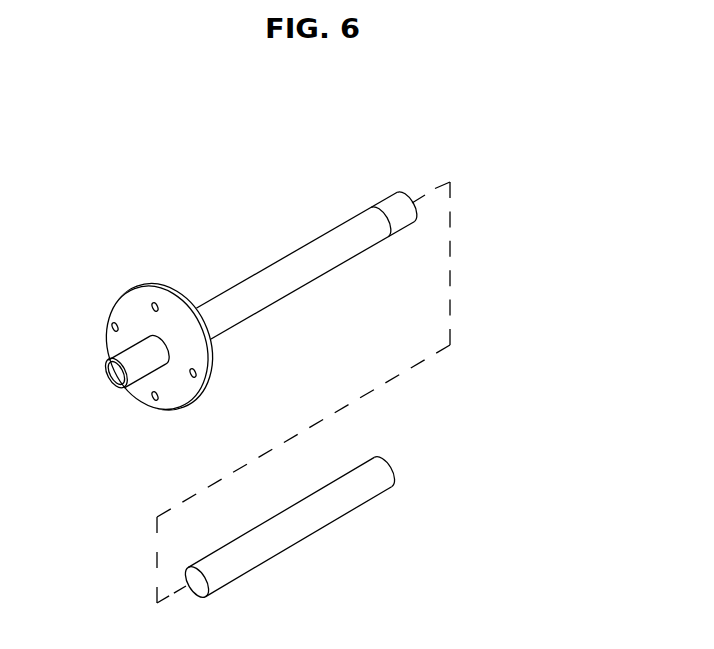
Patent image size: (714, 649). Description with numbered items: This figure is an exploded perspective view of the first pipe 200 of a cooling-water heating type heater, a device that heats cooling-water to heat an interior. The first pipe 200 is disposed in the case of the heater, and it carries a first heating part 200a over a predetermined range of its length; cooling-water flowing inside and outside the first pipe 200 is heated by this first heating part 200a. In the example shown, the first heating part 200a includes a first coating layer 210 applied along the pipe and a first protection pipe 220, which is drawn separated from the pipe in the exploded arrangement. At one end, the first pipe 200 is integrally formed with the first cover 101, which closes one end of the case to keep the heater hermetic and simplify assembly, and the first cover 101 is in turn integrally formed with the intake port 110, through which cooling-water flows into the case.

The first pipe 200 is at (282, 273).
The first heating part 200a is at (532, 282).
The first cover 101 is at (182, 402).
The intake port 110 is at (138, 353).
The first coating layer 210 is at (362, 251).
The first protection pipe 220 is at (383, 475).